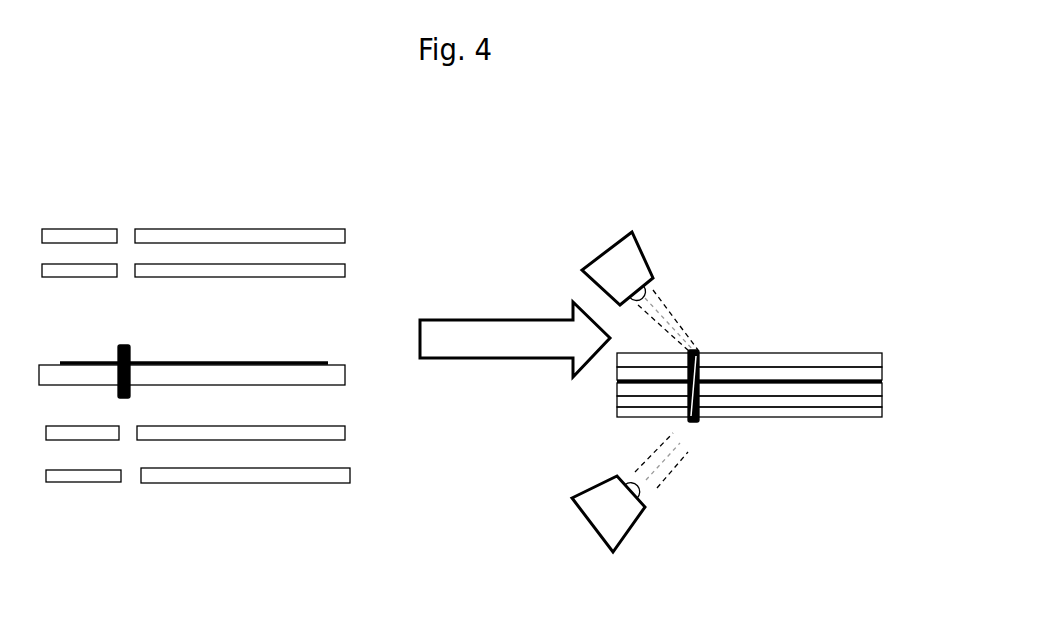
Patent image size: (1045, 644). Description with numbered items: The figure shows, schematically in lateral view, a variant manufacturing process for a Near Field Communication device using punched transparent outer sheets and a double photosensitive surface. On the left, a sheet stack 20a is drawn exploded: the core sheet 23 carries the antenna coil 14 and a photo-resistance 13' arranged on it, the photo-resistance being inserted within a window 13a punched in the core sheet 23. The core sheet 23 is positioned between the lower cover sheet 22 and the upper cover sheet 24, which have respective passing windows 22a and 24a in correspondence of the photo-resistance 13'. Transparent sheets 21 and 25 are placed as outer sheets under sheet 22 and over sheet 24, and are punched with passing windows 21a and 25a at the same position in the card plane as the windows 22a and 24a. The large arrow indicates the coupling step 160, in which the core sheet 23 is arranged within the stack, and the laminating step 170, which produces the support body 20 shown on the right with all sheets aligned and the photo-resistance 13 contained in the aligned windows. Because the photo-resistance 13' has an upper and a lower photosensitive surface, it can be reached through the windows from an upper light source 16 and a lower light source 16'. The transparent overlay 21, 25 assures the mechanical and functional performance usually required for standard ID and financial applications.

The photo-resistance 13 is at (597, 394).
The photo-resistance with double photosensitive surface 13' is at (193, 356).
The window in core sheet 13a is at (132, 375).
The antenna coil 14 is at (287, 357).
The upper light source 16 is at (640, 292).
The lower light source 16' is at (635, 492).
The support body 20 is at (797, 450).
The sheet stack 20a is at (193, 500).
The transparent sheet 21 is at (352, 472).
The passing window in lower transparent sheet 21a is at (133, 480).
The lower cover sheet 22 is at (347, 430).
The passing window in lower cover sheet 22a is at (128, 438).
The core sheet 23 is at (347, 368).
The cover sheet 24 is at (347, 268).
The window in cover sheet 24a is at (130, 280).
The transparent sheet 25 is at (347, 233).
The passing window in upper transparent sheet 25a is at (127, 227).
The coupling step 160 is at (515, 324).
The laminating step 170 is at (515, 324).